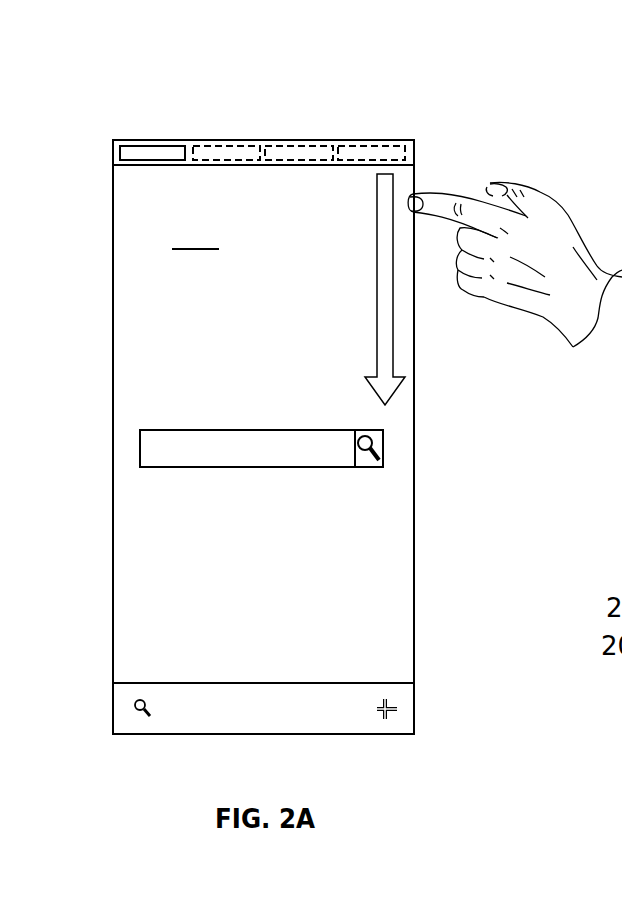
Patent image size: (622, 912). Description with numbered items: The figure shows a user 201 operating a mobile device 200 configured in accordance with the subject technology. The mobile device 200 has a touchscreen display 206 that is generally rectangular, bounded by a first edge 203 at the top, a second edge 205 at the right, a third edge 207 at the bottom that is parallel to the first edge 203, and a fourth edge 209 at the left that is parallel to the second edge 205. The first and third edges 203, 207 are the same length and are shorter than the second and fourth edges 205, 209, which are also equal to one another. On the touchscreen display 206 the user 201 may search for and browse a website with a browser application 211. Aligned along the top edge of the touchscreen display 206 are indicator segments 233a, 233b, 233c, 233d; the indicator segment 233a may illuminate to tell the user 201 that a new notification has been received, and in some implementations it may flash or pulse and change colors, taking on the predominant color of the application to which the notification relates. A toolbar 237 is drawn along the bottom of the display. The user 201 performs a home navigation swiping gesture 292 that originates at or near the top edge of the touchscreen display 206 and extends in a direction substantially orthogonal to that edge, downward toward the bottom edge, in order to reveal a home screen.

The mobile device 200 is at (82, 53).
The user 201 is at (510, 313).
The first edge 203 is at (252, 139).
The second edge 205 is at (415, 562).
The touchscreen display 206 is at (200, 577).
The third edge 207 is at (263, 735).
The fourth edge 209 is at (112, 322).
The browser application 211 is at (197, 237).
The indicator segment 233a is at (154, 146).
The indicator segment 233b is at (232, 146).
The indicator segment 233c is at (300, 146).
The indicator segment 233d is at (376, 146).
The bottom toolbar 237 is at (278, 698).
The home navigation swiping gesture 292 is at (377, 255).